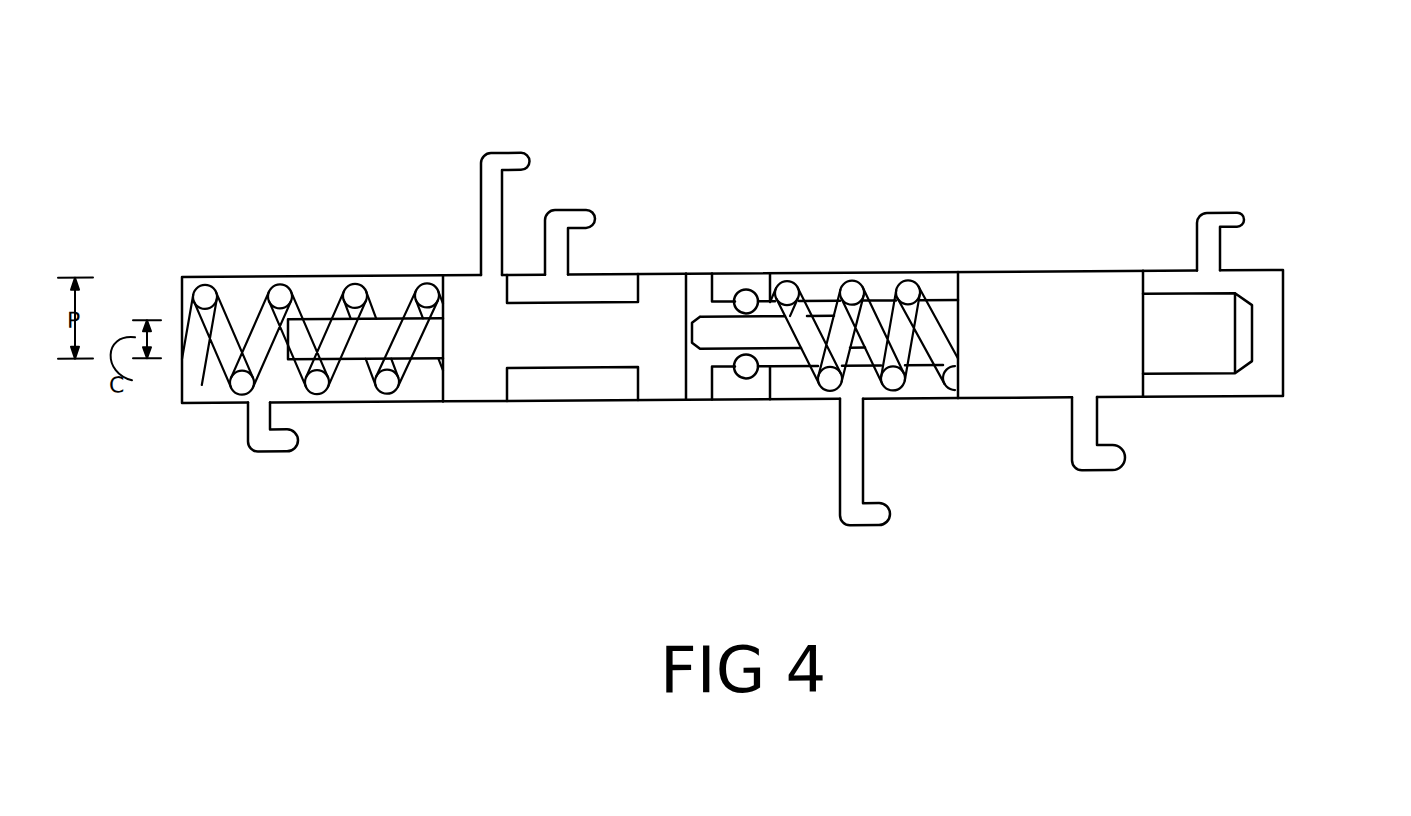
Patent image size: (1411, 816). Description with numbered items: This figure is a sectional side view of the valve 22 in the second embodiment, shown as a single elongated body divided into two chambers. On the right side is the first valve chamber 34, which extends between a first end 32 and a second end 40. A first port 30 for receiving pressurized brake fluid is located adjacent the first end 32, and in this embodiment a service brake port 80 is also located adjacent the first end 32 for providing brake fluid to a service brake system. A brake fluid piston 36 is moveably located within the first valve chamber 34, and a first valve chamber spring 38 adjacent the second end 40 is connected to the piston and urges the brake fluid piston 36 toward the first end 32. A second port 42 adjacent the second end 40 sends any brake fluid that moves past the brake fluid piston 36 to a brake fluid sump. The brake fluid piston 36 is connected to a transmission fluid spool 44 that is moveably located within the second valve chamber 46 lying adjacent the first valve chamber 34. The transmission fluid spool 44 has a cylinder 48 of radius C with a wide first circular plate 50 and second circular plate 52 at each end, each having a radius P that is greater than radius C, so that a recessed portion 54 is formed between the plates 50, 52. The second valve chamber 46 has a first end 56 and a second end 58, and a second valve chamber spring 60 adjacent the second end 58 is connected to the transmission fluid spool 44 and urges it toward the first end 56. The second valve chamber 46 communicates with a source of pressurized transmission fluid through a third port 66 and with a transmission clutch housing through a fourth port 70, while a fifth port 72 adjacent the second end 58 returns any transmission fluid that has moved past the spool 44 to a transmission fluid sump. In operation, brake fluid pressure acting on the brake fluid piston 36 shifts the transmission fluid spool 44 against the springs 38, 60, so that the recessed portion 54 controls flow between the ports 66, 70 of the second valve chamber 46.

The valve 22 is at (597, 123).
The first port 30 is at (1208, 277).
The first end 32 is at (1306, 330).
The first valve chamber 34 is at (938, 253).
The brake fluid piston 36 is at (1113, 386).
The first valve chamber spring 38 is at (852, 288).
The second end 40 is at (827, 409).
The second port 42 is at (851, 402).
The transmission fluid spool 44 is at (588, 445).
The second valve chamber 46 is at (450, 249).
The cylinder 48 is at (590, 350).
The first circular plate 50 is at (663, 290).
The second circular plate 52 is at (470, 375).
The recessed portion 54 is at (600, 393).
The first end 56 is at (610, 190).
The second end 58 is at (312, 160).
The second valve chamber spring 60 is at (289, 277).
The third port 66 is at (557, 277).
The fourth port 70 is at (493, 277).
The fifth port 72 is at (260, 405).
The service brake port 80 is at (1087, 413).